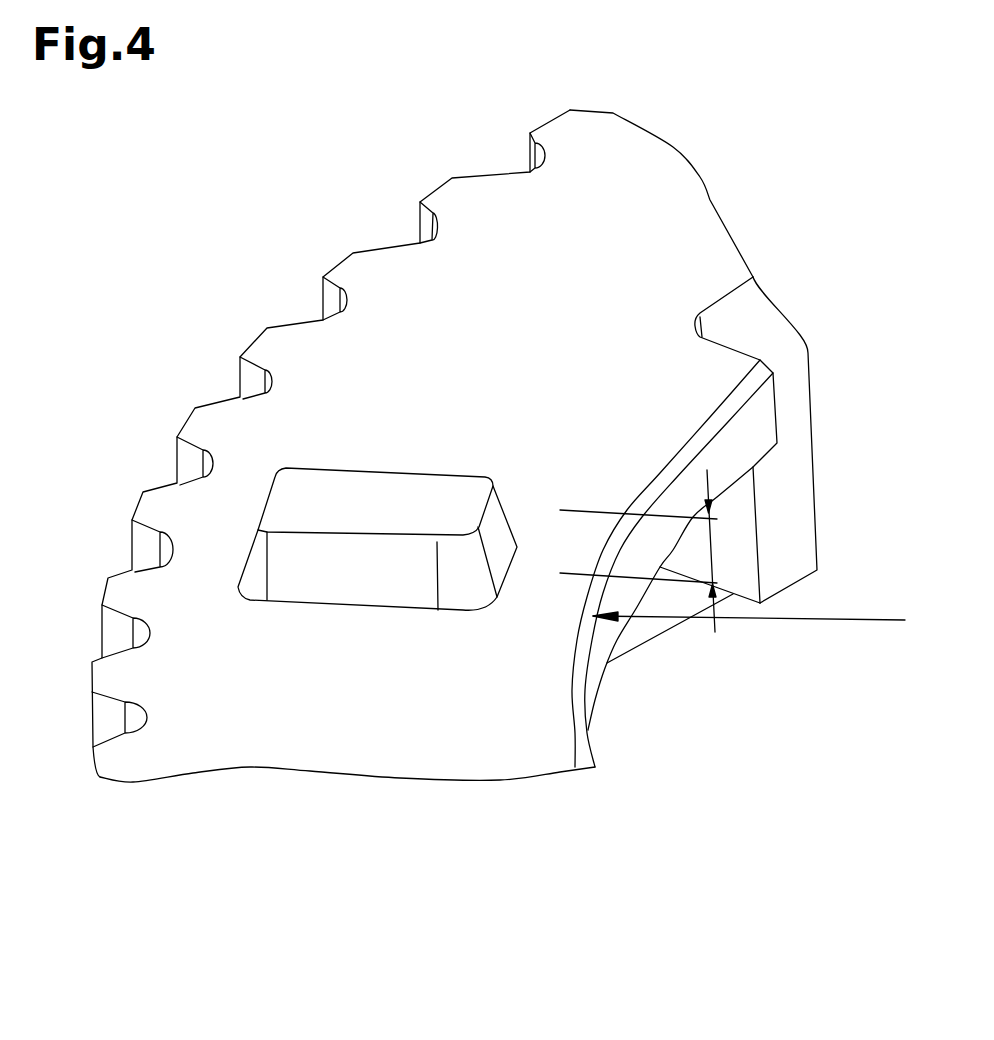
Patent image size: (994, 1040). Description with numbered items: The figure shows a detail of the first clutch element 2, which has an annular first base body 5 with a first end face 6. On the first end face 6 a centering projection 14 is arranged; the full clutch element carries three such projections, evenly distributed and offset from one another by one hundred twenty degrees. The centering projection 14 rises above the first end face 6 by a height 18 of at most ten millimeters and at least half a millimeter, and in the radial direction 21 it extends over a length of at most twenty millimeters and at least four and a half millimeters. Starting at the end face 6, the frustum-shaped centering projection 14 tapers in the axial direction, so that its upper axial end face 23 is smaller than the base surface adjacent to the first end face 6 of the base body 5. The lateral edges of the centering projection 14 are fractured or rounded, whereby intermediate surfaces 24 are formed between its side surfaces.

The first clutch element 2 is at (147, 222).
The first base body 5 is at (479, 322).
The first end face 6 is at (603, 413).
The centering projection 14 is at (408, 432).
The height 18 is at (715, 557).
The radial direction 21 is at (793, 622).
The upper axial end face 23 is at (348, 506).
The intermediate surfaces 24 is at (467, 580).